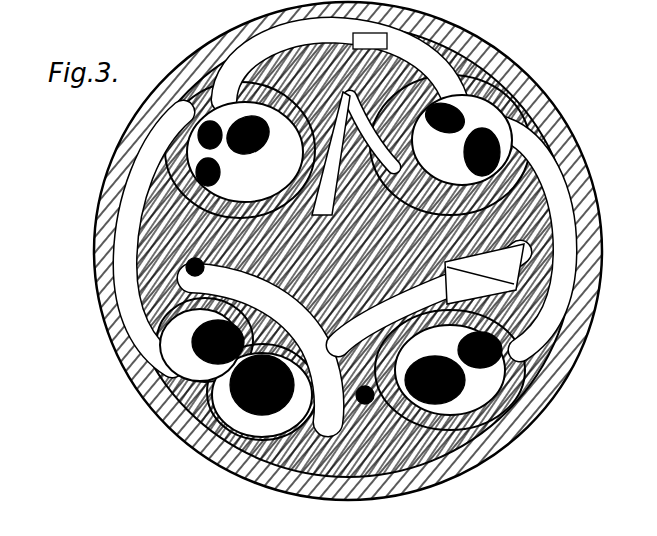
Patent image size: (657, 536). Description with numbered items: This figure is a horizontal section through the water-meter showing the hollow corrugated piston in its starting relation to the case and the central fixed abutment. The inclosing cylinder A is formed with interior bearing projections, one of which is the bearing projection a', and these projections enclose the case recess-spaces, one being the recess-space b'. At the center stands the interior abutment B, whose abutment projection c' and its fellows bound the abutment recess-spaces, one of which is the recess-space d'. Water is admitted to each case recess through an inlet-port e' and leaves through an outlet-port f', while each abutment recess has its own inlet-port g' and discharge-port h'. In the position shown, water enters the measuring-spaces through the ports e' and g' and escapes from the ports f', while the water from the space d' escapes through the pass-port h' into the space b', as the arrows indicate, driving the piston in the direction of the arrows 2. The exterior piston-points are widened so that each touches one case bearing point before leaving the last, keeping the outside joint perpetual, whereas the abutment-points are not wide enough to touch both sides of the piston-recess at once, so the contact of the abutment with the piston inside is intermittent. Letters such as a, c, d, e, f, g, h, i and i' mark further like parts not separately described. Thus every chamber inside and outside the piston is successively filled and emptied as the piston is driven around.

The cylinder A is at (338, 251).
The interior abutment B is at (335, 245).
The arrows 2 is at (358, 229).
The passage a is at (331, 153).
The interior bearing projection a' is at (445, 166).
The recess-space b' is at (341, 65).
The port c is at (286, 97).
The abutment projection c' is at (416, 108).
The spiral arm d is at (372, 134).
The abutment recess-space d' is at (439, 177).
The chamber e is at (497, 174).
The inlet-port e' is at (245, 132).
The valve f is at (440, 92).
The outlet-port f' is at (497, 408).
The piston g is at (239, 100).
The abutment inlet-port g' is at (454, 95).
The outlet h is at (193, 391).
The discharge-port h' is at (390, 42).
The slot i is at (410, 177).
The slot i' is at (448, 193).